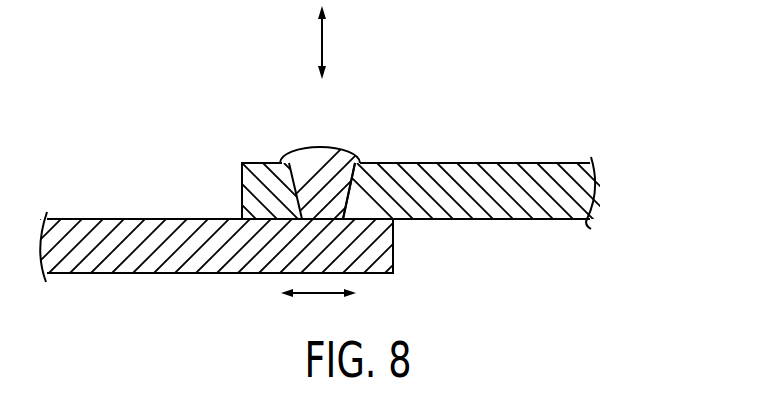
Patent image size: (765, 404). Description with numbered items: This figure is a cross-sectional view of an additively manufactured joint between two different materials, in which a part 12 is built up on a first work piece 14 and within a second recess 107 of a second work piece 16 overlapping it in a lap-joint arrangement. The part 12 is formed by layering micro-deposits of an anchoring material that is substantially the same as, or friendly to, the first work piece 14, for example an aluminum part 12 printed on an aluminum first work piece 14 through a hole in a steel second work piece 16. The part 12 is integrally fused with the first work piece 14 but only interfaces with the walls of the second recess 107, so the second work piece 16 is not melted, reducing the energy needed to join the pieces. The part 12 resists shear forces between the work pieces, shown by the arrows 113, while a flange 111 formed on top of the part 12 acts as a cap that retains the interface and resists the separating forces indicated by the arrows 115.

The part 12 is at (320, 148).
The first work piece 14 is at (85, 230).
The second work piece 16 is at (543, 177).
The second recess 107 is at (352, 183).
The flange 111 is at (287, 148).
The arrows 113 is at (315, 296).
The arrows 115 is at (322, 42).